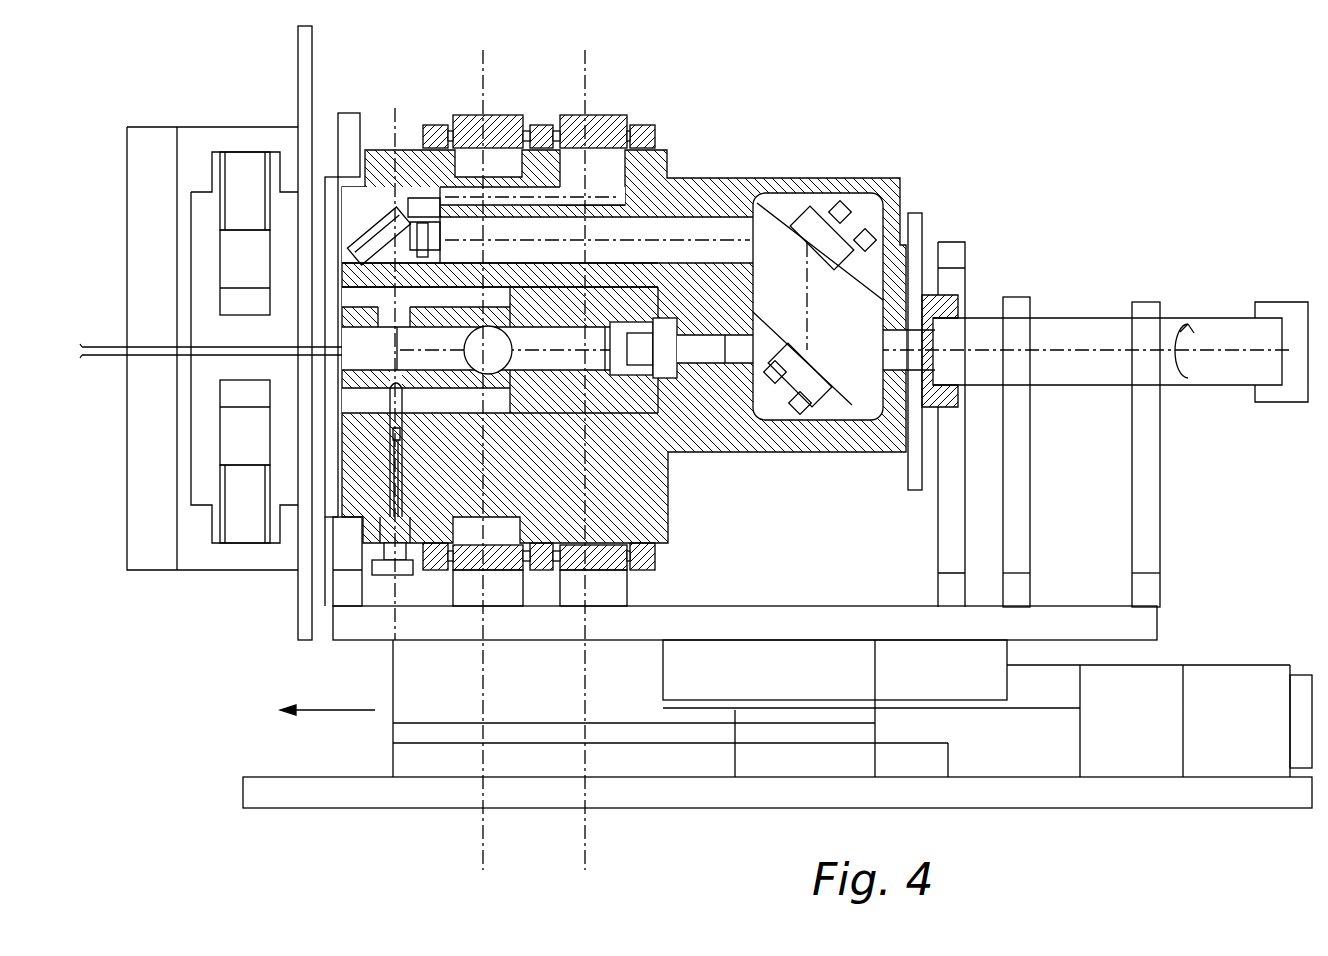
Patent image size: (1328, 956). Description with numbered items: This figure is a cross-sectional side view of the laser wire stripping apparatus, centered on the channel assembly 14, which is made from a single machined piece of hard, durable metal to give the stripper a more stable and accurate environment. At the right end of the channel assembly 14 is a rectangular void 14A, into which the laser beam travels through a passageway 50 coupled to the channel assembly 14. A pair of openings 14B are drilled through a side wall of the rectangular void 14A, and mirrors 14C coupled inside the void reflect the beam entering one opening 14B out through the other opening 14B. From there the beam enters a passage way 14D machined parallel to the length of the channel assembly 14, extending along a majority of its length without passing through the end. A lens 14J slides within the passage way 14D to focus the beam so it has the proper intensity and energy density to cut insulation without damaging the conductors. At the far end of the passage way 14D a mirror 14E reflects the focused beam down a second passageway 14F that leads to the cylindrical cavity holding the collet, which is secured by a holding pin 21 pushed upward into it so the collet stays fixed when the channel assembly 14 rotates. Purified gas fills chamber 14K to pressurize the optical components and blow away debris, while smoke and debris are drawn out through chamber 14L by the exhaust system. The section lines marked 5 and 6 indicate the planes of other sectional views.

The channel assembly 14 is at (770, 182).
The rectangular void 14A is at (870, 205).
The openings 14B is at (808, 225).
The mirrors 14C is at (852, 212).
The passage way 14D is at (712, 230).
The mirror 14E is at (377, 243).
The second passageway 14F is at (420, 278).
The lens 14J is at (422, 228).
The chamber 14K is at (607, 163).
The chamber 14L is at (500, 160).
The holding pin 21 is at (400, 575).
The passageway 50 is at (1075, 318).
The section line 5 is at (485, 853).
The section line 6 is at (588, 853).